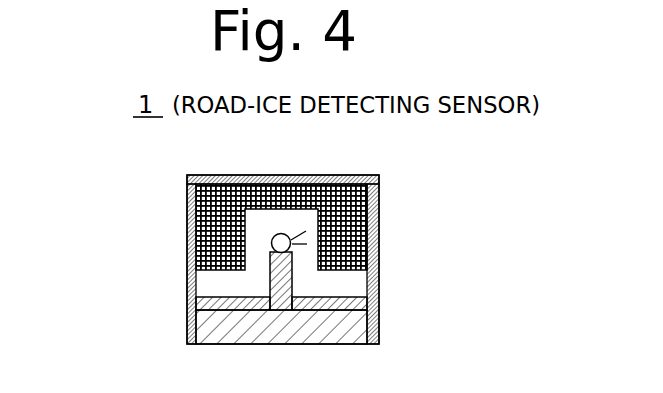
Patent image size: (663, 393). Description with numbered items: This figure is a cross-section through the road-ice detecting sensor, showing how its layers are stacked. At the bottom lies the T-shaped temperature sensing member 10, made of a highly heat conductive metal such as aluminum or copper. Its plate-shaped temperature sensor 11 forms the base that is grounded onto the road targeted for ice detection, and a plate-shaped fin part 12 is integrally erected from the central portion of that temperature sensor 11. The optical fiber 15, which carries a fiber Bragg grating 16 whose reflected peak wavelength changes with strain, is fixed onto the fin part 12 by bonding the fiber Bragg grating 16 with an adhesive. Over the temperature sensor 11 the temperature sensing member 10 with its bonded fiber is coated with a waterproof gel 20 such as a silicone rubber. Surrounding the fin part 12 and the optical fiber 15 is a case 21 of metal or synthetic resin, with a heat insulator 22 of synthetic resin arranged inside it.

The temperature sensing member 10 is at (187, 322).
The temperature sensor 11 is at (366, 322).
The fin part 12 is at (293, 278).
The optical fiber 15 is at (290, 238).
The fiber Bragg grating 16 is at (377, 180).
The waterproof gel 20 is at (203, 296).
The case 21 is at (187, 198).
The heat insulator 22 is at (200, 226).